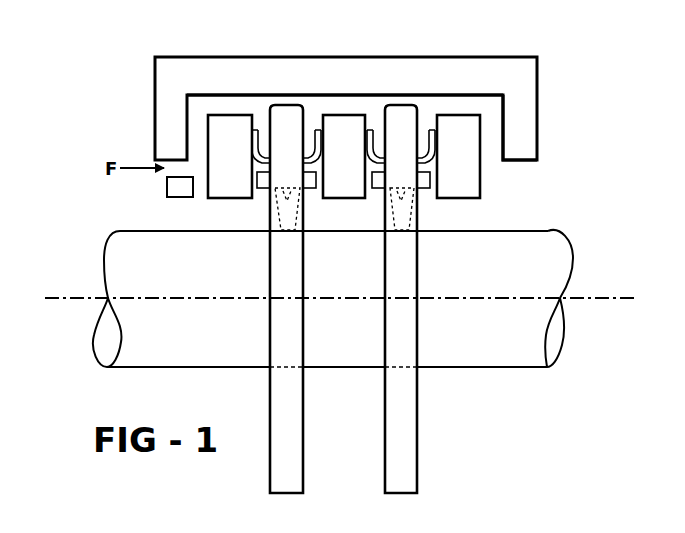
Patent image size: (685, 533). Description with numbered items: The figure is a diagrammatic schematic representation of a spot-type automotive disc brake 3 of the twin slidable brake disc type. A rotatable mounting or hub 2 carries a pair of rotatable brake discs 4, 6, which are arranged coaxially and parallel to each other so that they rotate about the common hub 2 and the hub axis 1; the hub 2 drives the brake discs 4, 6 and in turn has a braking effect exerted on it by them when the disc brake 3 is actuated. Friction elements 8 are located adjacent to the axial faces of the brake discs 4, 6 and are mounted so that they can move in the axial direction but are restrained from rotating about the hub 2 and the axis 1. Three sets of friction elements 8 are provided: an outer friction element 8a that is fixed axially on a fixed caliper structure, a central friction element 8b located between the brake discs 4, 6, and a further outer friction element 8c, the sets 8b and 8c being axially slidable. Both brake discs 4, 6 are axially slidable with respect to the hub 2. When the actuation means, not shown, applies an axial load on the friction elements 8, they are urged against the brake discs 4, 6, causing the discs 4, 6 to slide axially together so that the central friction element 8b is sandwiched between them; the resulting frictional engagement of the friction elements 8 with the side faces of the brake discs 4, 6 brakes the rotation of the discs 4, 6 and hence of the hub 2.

The axis 1 is at (62, 298).
The rotatable mounting or hub 2 is at (523, 233).
The spot-type automotive disc brake 3 is at (611, 341).
The brake disc 4 is at (284, 108).
The brake disc 6 is at (405, 118).
The friction elements 8 is at (209, 108).
The friction element 8a is at (187, 128).
The central friction element 8b is at (338, 118).
The friction element 8c is at (483, 143).